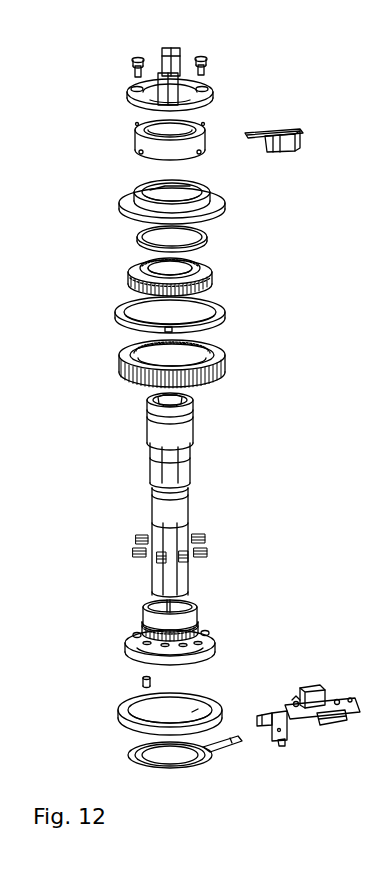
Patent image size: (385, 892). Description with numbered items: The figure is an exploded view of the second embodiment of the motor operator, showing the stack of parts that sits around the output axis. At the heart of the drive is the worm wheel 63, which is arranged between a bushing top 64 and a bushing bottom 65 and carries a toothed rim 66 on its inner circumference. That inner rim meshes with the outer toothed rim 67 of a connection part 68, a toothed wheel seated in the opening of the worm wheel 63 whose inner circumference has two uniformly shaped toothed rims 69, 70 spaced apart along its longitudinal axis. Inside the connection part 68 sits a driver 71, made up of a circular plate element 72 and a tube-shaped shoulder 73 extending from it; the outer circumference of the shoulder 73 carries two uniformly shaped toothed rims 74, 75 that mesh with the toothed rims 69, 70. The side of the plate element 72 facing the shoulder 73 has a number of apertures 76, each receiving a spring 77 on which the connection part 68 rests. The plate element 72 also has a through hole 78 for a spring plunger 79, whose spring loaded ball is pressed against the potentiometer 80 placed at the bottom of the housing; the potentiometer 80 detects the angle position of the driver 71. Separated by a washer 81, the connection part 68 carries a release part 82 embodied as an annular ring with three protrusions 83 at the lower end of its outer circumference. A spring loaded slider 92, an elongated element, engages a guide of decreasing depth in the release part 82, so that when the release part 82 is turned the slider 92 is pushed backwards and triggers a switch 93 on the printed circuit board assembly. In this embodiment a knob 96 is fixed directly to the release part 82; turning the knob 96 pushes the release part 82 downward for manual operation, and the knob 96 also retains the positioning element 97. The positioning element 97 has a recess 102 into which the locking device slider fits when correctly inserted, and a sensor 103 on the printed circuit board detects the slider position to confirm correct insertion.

The worm wheel 63 is at (228, 368).
The bushing top 64 is at (226, 317).
The bushing bottom 65 is at (117, 720).
The toothed rim 66 is at (135, 347).
The outer toothed rim 67 is at (128, 280).
The connection part 68 is at (232, 276).
The toothed rim 69 is at (150, 260).
The toothed rim 70 is at (200, 260).
The driver 71 is at (256, 616).
The circular plate element 72 is at (201, 655).
The tube-shaped shoulder 73 is at (198, 602).
The toothed rim 74 is at (148, 623).
The toothed rim 75 is at (132, 627).
The aperture 76 is at (124, 643).
The spring 77 is at (132, 545).
The through hole 78 is at (212, 635).
The spring plunger 79 is at (138, 683).
The potentiometer 80 is at (130, 758).
The washer 81 is at (226, 201).
The release part 82 is at (115, 130).
The protrusion 83 is at (138, 152).
The spring loaded slider 92 is at (296, 131).
The switch 93 is at (277, 739).
The knob 96 is at (163, 53).
The positioning element 97 is at (189, 458).
The recess 102 is at (189, 492).
The sensor 103 is at (338, 727).